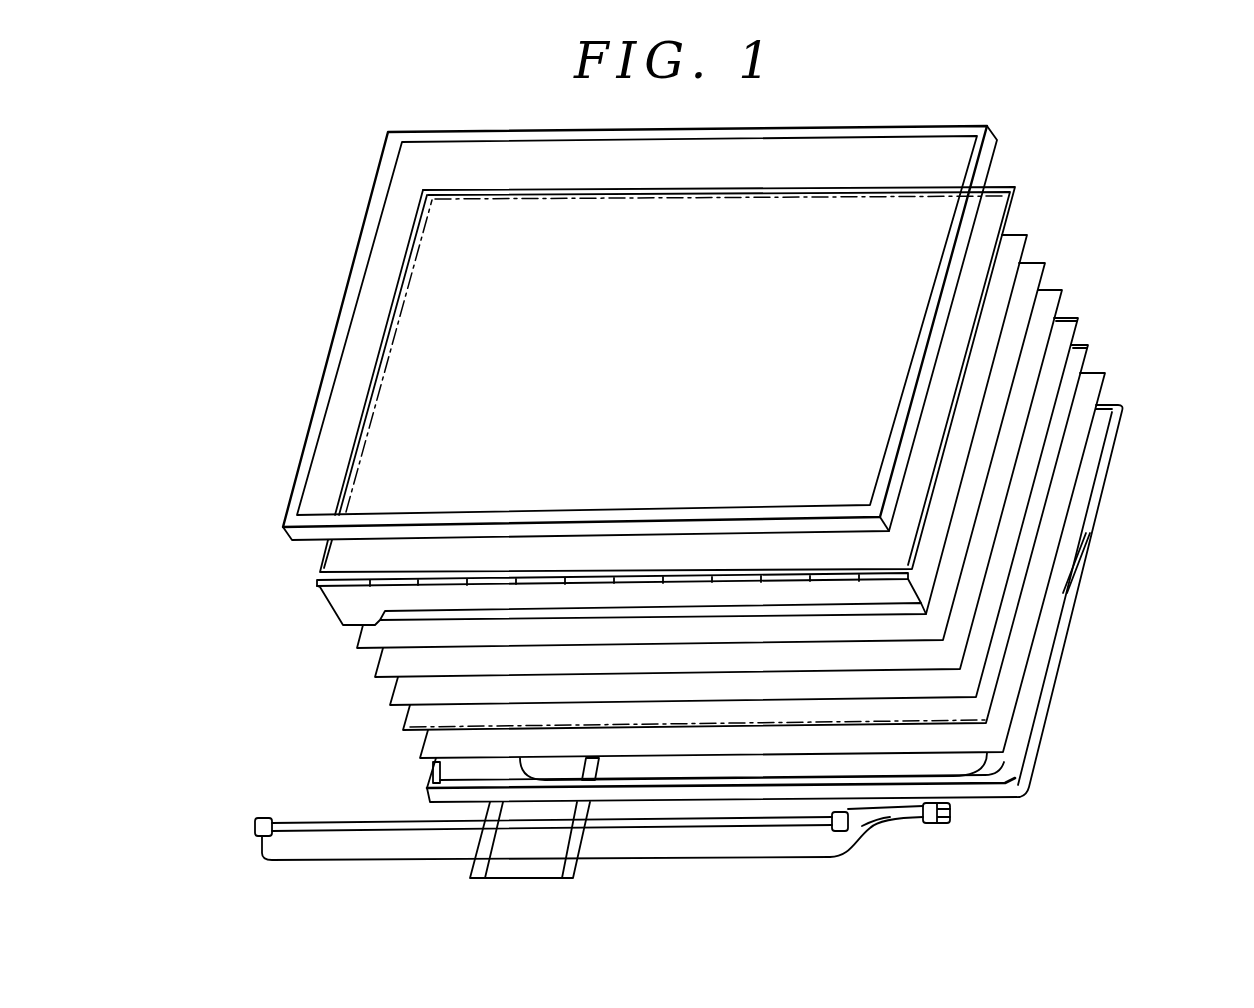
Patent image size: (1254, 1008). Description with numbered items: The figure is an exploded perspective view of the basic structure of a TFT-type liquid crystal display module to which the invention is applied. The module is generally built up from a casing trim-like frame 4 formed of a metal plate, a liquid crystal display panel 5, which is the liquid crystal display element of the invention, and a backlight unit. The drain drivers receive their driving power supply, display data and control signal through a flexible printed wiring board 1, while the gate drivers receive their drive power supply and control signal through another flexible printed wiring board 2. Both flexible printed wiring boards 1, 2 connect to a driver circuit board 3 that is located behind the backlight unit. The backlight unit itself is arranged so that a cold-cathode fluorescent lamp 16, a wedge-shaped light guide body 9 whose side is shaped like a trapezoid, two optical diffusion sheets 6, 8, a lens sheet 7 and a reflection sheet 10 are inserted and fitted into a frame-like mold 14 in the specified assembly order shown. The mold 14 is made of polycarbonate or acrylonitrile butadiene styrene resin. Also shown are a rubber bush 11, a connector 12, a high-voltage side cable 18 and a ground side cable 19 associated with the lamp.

The flexible printed wiring board 1 is at (325, 618).
The flexible printed wiring board 2 is at (318, 563).
The driver circuit board 3 is at (490, 817).
The frame 4 is at (312, 410).
The liquid crystal display panel 5 is at (400, 455).
The optical diffusion sheet 6 is at (1035, 246).
The lens sheet 7 is at (1055, 263).
The optical diffusion sheet 8 is at (1078, 330).
The wedge-shaped light guide body 9 is at (1090, 358).
The reflection sheet 10 is at (1103, 388).
The rubber bush 11 is at (877, 812).
The connector 12 is at (955, 818).
The mold 14 is at (1123, 455).
The cold-cathode fluorescent lamp 16 is at (770, 826).
The high-voltage side cable 18 is at (860, 830).
The ground side cable 19 is at (700, 856).